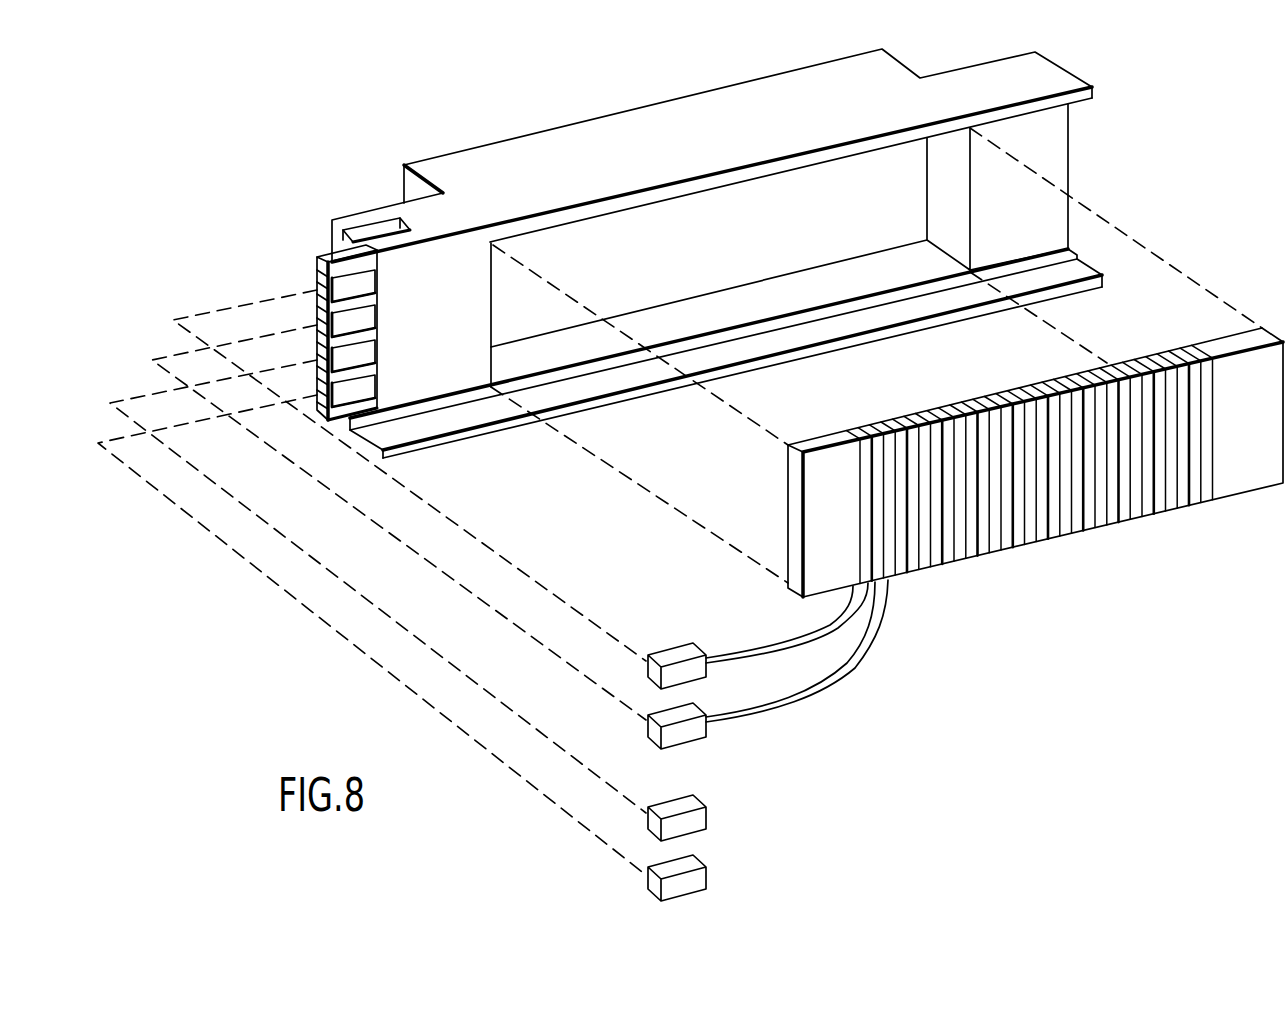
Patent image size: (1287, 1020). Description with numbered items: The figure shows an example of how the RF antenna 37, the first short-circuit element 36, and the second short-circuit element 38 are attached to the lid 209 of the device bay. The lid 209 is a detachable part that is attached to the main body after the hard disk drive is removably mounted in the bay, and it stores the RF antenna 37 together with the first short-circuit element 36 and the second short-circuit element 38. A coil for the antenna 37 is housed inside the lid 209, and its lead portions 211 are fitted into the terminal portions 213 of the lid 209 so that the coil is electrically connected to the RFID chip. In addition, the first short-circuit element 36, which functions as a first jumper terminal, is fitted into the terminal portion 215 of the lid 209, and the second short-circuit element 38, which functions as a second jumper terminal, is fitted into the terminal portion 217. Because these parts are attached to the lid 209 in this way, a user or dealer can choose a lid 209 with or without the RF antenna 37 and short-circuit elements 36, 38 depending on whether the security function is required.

The lid 209 is at (590, 106).
The terminal portions 213 is at (352, 280).
The terminal portion 215 is at (325, 356).
The terminal portion 217 is at (338, 410).
The lead portions 211 is at (650, 676).
The first short-circuit element 36 is at (706, 818).
The second short-circuit element 38 is at (706, 877).
The RF antenna 37 is at (1042, 556).